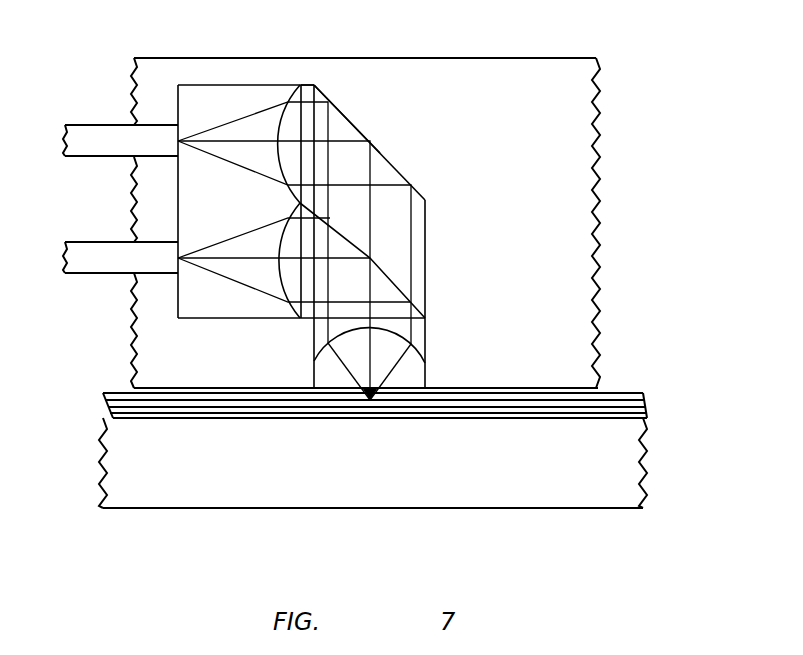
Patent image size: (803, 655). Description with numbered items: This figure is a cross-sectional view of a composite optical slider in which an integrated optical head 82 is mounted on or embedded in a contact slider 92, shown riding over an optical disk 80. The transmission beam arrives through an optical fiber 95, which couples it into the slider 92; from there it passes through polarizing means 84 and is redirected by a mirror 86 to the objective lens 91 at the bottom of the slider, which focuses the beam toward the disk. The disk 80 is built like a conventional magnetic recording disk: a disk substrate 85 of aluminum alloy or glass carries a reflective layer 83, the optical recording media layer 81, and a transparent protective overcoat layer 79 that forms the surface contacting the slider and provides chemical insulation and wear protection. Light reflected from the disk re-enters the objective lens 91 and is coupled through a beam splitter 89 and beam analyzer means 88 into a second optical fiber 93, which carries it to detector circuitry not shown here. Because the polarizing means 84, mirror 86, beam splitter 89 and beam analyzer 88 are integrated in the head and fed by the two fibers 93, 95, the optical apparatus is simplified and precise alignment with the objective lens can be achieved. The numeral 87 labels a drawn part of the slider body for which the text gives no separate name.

The protective overcoat layer 79 is at (652, 395).
The optical disk 80 is at (429, 439).
The optical recording media layer 81 is at (648, 404).
The integrated optical head 82 is at (347, 112).
The reflective layer 83 is at (650, 422).
The polarizing means 84 is at (313, 70).
The disk substrate 85 is at (640, 487).
The mirror 86 is at (398, 165).
The housing 87 is at (588, 95).
The beam analyzer means 88 is at (300, 210).
The beam splitter 89 is at (396, 284).
The objective lens 91 is at (417, 363).
The contact slider 92 is at (503, 58).
The optical fiber 93 is at (87, 275).
The optical fiber 95 is at (82, 157).